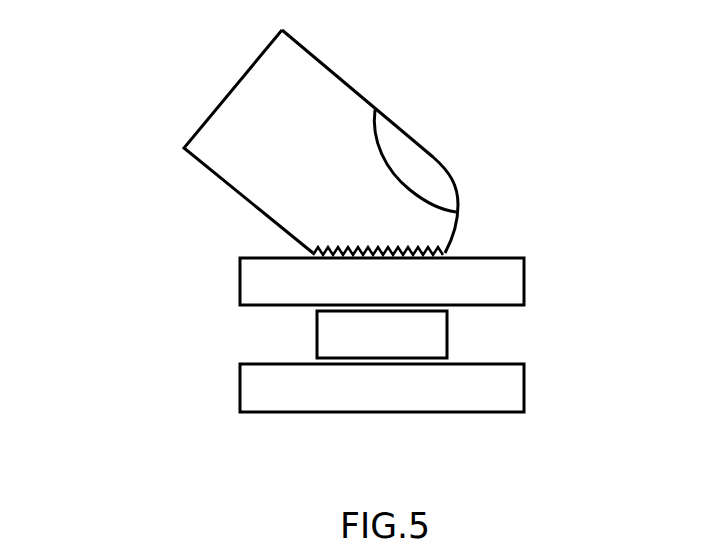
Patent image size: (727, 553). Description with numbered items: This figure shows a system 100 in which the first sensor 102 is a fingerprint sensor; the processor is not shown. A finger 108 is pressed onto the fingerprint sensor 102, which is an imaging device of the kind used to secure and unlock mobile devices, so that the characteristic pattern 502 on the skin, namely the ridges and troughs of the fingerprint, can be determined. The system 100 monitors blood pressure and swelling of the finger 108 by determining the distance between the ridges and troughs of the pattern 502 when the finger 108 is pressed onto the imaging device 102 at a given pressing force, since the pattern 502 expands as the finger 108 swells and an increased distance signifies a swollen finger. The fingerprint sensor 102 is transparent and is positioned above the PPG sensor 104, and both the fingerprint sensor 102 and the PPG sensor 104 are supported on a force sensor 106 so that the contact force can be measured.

The system 100 is at (126, 334).
The first sensor 102 is at (524, 283).
The PPG sensor 104 is at (447, 337).
The force sensor 106 is at (524, 390).
The finger 108 is at (328, 65).
The characteristic pattern 502 is at (350, 226).